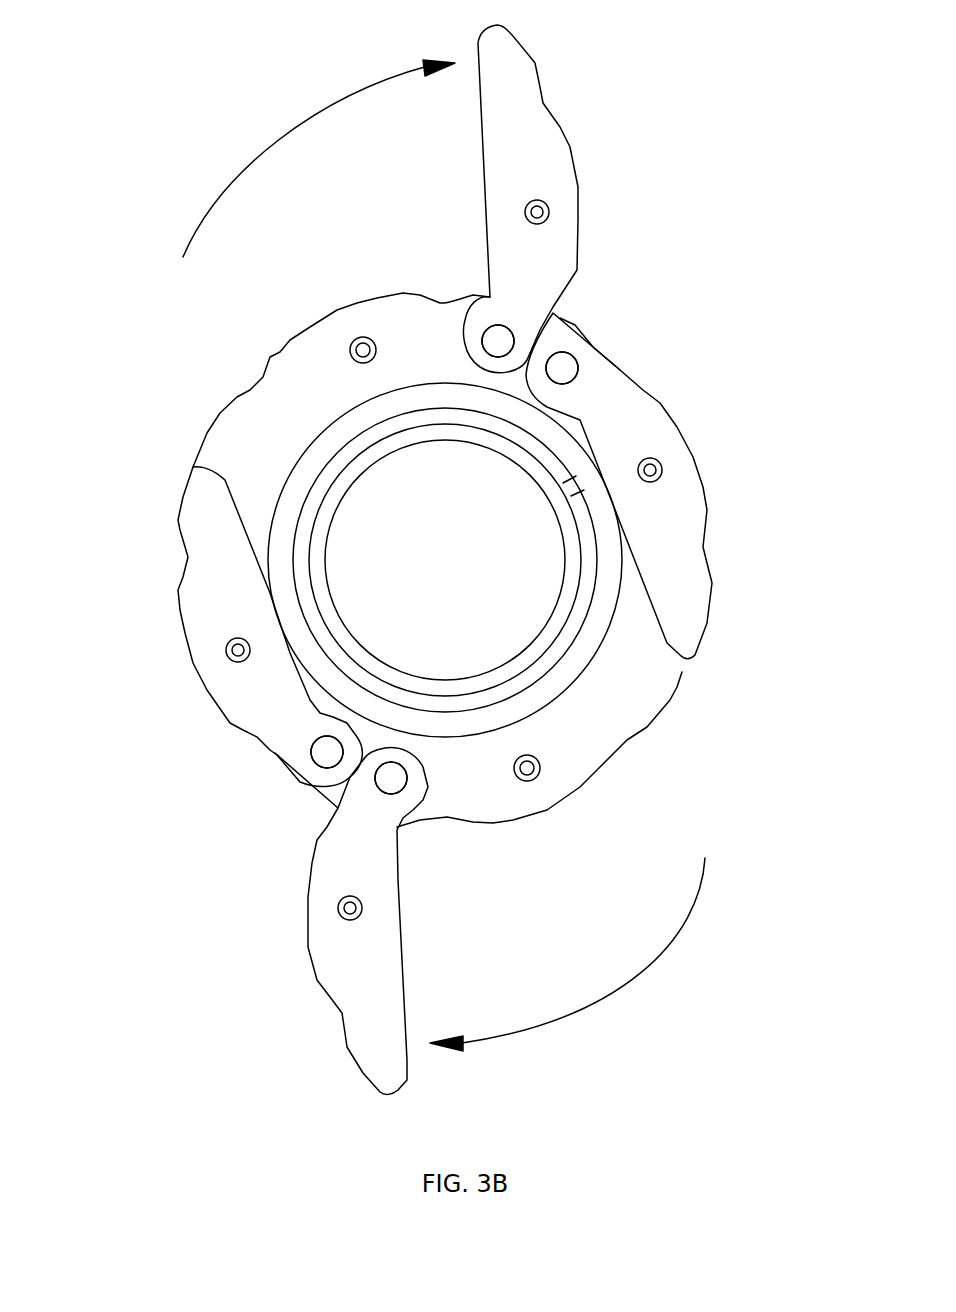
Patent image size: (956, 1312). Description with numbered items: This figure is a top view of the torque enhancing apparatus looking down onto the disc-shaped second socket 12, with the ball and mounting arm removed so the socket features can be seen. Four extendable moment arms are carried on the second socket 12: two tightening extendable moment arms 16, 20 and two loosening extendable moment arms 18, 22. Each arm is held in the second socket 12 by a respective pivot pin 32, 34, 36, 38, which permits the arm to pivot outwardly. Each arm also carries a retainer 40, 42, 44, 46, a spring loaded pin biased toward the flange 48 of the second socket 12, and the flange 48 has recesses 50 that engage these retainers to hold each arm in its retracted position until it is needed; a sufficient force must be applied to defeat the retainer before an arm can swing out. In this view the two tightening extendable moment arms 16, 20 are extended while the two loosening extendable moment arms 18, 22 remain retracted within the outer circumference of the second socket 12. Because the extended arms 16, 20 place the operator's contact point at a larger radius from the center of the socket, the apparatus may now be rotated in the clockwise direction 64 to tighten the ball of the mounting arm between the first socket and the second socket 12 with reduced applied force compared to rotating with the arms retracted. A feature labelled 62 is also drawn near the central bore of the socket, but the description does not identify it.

The second socket 12 is at (490, 825).
The tightening extendable moment arm 16 is at (520, 78).
The loosening extendable moment arm 18 is at (680, 595).
The tightening extendable moment arm 20 is at (325, 938).
The loosening extendable moment arm 22 is at (197, 527).
The pivot pin 32 is at (498, 341).
The pivot pin 34 is at (573, 368).
The pivot pin 36 is at (397, 785).
The pivot pin 38 is at (327, 752).
The retainer 40 is at (549, 208).
The retainer 42 is at (662, 470).
The retainer 44 is at (362, 905).
The retainer 46 is at (226, 650).
The flange 48 is at (240, 438).
The recess 50 is at (363, 337).
The annular channel 62 is at (573, 660).
The clockwise direction 64 is at (305, 116).